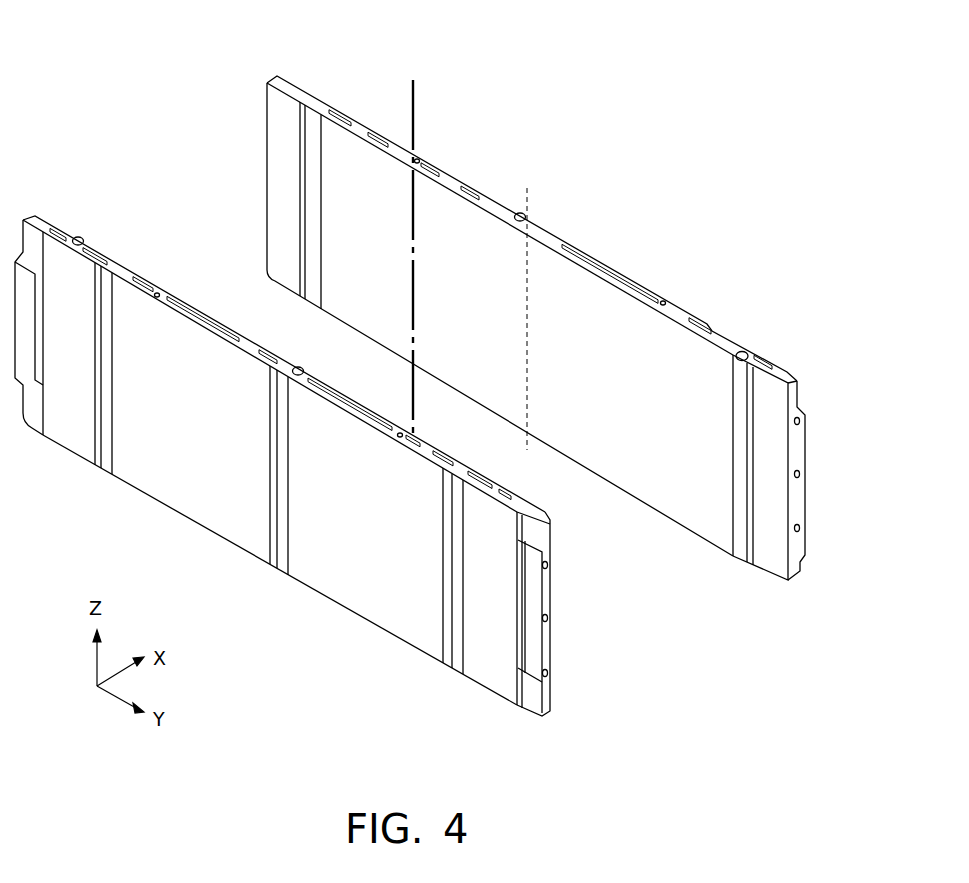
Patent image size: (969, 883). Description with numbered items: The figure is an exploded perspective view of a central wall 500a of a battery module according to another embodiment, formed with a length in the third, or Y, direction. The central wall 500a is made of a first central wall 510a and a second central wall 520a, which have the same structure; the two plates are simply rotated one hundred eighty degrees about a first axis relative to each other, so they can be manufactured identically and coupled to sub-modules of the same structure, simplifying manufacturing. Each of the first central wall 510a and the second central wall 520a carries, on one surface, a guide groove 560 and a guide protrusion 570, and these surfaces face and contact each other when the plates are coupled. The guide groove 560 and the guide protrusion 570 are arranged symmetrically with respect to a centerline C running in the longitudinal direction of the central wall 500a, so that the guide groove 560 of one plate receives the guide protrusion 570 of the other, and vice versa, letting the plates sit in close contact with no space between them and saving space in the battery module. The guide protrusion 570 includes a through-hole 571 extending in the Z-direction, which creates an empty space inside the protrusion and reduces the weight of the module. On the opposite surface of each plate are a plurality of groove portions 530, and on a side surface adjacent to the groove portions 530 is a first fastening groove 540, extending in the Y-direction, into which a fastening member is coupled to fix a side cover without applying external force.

The central wall 500a is at (205, 56).
The first central wall 510a is at (44, 228).
The second central wall 520a is at (273, 129).
The groove portion 530 is at (453, 660).
The first fastening groove 540 is at (553, 563).
The guide groove 560 is at (320, 201).
The guide protrusion 570 is at (84, 240).
The through-hole 571 is at (736, 340).
The centerline C is at (524, 181).